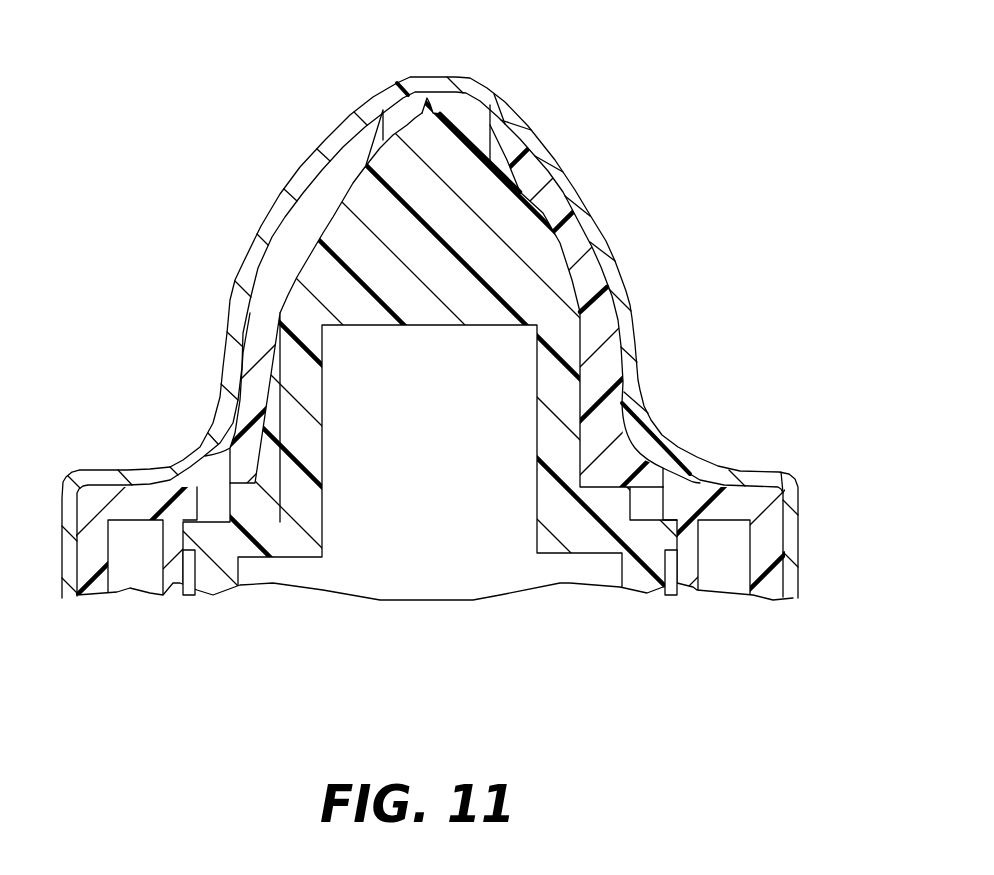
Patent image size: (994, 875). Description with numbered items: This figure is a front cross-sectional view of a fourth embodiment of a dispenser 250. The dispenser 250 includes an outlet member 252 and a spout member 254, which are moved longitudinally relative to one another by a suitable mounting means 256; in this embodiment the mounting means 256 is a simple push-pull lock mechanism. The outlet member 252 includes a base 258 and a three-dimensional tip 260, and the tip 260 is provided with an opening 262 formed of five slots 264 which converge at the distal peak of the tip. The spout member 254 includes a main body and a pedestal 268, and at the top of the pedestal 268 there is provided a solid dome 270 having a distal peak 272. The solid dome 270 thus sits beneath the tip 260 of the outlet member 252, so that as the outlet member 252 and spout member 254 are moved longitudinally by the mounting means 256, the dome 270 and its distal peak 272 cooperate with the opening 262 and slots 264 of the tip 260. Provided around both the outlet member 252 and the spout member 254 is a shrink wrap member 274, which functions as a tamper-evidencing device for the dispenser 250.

The dispenser 250 is at (210, 181).
The outlet member 252 is at (595, 478).
The spout member 254 is at (640, 575).
The mounting means 256 is at (174, 606).
The base 258 is at (772, 540).
The 3-D tip 260 is at (570, 242).
The opening 262 is at (401, 112).
The slots 264 is at (345, 155).
The pedestal 268 is at (240, 567).
The solid dome 270 is at (498, 208).
The distal peak 272 is at (473, 100).
The shrink wrap member 274 is at (637, 380).